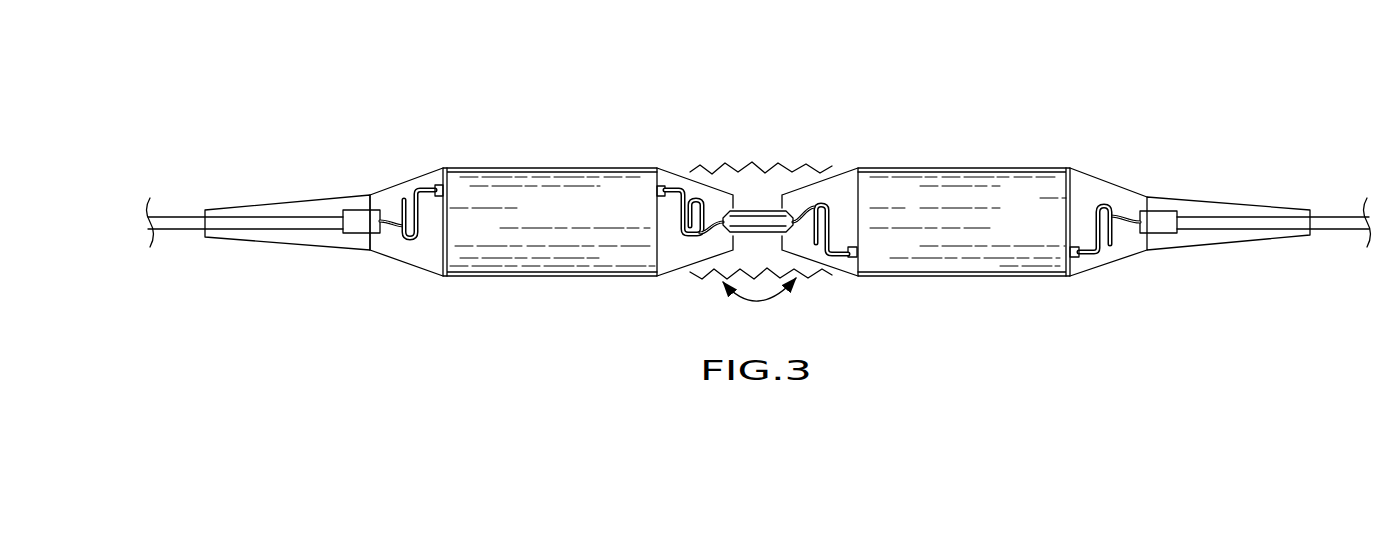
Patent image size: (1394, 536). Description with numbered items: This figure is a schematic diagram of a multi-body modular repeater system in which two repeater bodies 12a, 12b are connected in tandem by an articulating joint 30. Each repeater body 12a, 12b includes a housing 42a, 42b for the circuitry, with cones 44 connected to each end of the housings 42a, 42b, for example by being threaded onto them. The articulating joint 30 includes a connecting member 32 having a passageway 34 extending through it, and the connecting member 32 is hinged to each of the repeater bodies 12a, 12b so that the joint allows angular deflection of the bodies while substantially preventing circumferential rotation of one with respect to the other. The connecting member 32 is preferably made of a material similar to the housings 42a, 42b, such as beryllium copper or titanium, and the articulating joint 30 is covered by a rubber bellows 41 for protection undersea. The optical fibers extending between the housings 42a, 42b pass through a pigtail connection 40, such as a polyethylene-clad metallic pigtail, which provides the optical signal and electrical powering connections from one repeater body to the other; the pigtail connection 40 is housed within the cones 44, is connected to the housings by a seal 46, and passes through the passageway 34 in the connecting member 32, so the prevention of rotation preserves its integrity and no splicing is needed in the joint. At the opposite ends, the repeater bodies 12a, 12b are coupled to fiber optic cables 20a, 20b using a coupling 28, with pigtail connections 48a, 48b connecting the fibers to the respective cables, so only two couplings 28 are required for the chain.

The repeater body 12a is at (552, 134).
The repeater body 12b is at (971, 126).
The fiber optic cable 20a is at (175, 216).
The fiber optic cable 20b is at (1337, 218).
The coupling 28 is at (294, 184).
The articulating joint 30 is at (782, 143).
The connecting member 32 is at (750, 232).
The passageway 34 is at (763, 211).
The pigtail connection 40 is at (692, 239).
The rubber bellows 41 is at (737, 163).
The housing 42a is at (547, 277).
The housing 42b is at (957, 277).
The cone 44 is at (413, 180).
The seal 46 is at (657, 192).
The pigtail connection 48a is at (407, 242).
The pigtail connection 48b is at (1106, 250).